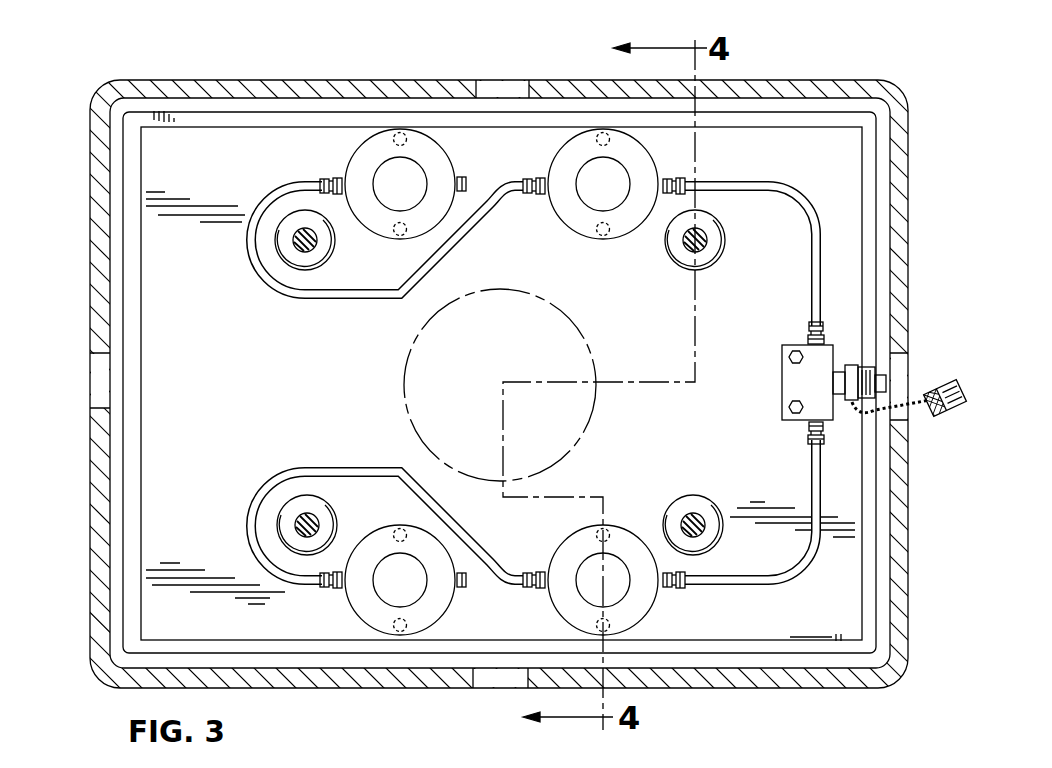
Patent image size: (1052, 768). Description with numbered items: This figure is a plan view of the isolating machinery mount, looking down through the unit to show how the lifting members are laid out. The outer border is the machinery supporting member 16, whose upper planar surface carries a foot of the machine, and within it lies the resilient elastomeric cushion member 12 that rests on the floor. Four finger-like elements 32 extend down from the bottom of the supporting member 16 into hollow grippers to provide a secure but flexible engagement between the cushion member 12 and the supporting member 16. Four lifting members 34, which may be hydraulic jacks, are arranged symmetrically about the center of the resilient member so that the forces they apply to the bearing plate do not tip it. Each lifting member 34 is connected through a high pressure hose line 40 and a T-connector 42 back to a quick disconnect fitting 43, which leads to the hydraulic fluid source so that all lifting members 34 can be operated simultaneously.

The elastomeric cushion member 12 is at (133, 120).
The machinery supporting member 16 is at (222, 88).
The finger-like element 32 is at (300, 242).
The lifting member 34 is at (362, 158).
The high pressure hose line 40 is at (820, 222).
The T-connector 42 is at (826, 362).
The quick disconnect fitting 43 is at (884, 383).